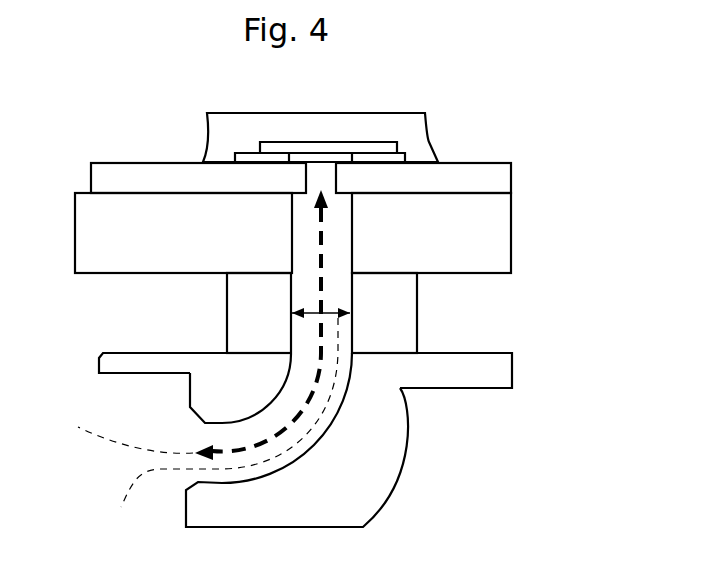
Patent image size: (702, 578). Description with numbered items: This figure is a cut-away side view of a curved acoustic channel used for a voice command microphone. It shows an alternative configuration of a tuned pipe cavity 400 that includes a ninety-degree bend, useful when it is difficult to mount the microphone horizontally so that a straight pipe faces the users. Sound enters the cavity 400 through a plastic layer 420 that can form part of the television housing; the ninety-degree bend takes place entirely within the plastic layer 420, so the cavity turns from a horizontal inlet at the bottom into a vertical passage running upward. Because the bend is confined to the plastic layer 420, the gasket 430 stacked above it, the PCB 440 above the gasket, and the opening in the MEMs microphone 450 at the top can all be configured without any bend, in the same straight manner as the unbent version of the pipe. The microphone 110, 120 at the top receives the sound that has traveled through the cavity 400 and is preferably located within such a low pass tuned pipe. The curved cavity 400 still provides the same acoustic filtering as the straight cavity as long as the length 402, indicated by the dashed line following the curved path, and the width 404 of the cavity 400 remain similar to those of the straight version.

The microphone M1 110 is at (175, 162).
The sensor element 120 is at (245, 149).
The tuned pipe cavity 400 is at (215, 434).
The length 402 is at (127, 430).
The width 404 is at (217, 425).
The plastic layer 420 is at (513, 365).
The gasket 430 is at (417, 312).
The PCB 440 is at (512, 232).
The MEMs microphone 450 is at (512, 178).